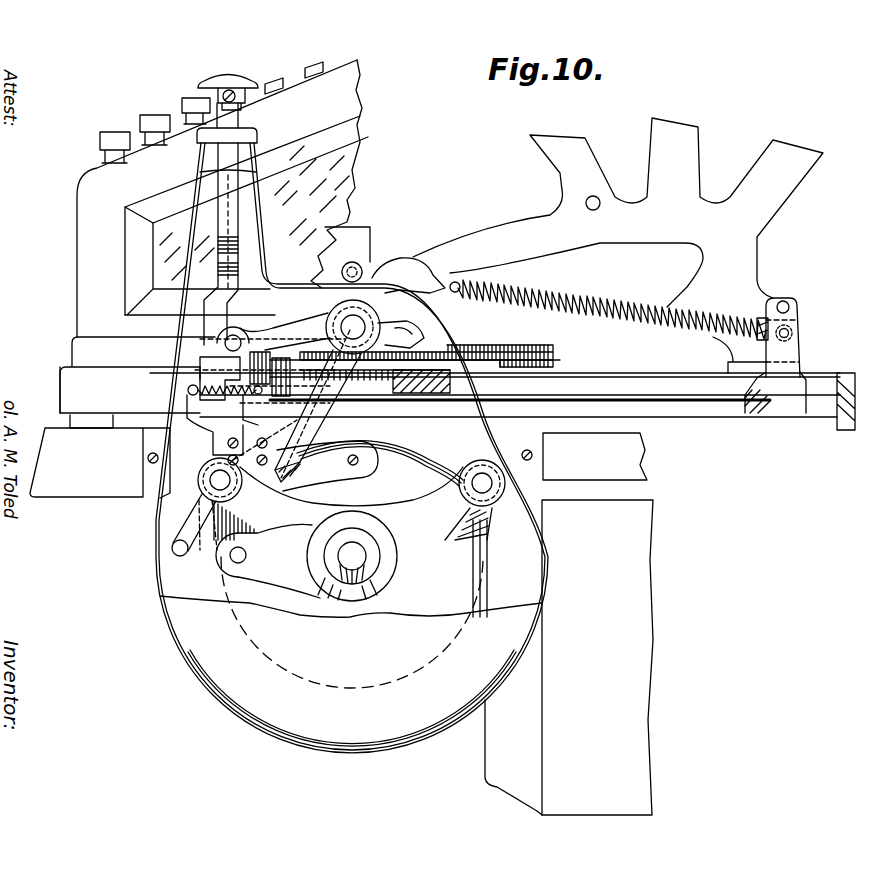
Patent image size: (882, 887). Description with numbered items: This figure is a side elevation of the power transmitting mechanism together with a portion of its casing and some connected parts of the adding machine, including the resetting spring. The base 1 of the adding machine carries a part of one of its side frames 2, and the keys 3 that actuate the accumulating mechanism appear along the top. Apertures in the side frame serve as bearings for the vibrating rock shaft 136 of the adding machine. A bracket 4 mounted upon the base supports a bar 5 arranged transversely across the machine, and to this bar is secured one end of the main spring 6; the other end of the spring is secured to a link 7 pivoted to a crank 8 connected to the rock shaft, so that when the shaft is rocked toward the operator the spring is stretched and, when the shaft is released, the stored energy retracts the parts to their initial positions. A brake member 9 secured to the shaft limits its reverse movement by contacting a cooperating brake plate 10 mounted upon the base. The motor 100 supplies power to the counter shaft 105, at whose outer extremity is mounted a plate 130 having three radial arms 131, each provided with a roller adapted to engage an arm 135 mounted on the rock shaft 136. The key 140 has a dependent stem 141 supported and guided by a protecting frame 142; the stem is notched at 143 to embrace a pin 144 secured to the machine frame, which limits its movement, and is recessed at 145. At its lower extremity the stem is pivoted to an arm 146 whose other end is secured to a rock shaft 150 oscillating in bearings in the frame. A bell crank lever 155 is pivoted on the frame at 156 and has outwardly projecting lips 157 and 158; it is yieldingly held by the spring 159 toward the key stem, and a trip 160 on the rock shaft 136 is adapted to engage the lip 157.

The base 1 is at (62, 389).
The side frame 2 is at (618, 245).
The keys 3 is at (113, 130).
The brackets 4 is at (787, 352).
The bar 5 is at (791, 332).
The main spring 6 is at (599, 298).
The link 7 is at (393, 258).
The crank 8 is at (447, 302).
The brake member 9 is at (457, 344).
The brake plate 10 is at (513, 343).
The motor 100 is at (569, 624).
The counter shaft 105 is at (357, 550).
The plate 130 is at (313, 577).
The radial arms 131 is at (209, 479).
The arm 135 is at (310, 421).
The rock shaft 136 is at (350, 325).
The key 140 is at (213, 78).
The stem 141 is at (223, 183).
The protecting frame 142 is at (267, 258).
The notch 143 is at (203, 380).
The pin 144 is at (187, 390).
The recess 145 is at (228, 402).
The arm 146 is at (195, 557).
The rock shaft 150 is at (228, 562).
The bell crank lever 155 is at (240, 360).
The pivot 156 is at (226, 342).
The lip 157 is at (275, 342).
The lip 158 is at (328, 403).
The spring 159 is at (197, 370).
The trip 160 is at (318, 383).